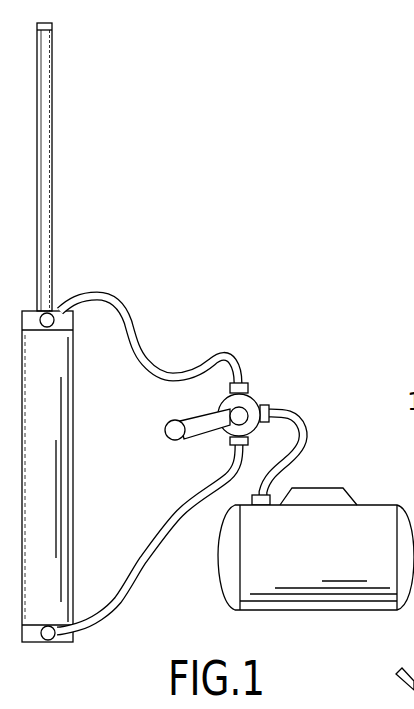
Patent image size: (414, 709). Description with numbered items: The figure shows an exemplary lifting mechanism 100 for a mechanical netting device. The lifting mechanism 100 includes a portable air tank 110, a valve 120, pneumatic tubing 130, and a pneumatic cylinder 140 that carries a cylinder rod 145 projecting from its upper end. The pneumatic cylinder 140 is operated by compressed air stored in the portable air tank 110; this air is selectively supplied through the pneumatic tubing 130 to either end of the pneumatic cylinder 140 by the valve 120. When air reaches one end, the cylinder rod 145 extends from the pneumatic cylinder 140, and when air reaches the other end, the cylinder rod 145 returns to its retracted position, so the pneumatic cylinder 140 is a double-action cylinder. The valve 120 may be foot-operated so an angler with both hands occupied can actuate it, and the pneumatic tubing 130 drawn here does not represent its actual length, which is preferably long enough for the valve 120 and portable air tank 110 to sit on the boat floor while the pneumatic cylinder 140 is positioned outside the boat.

The lifting mechanism 100 is at (218, 348).
The portable air tank 110 is at (330, 610).
The valve 120 is at (255, 395).
The pneumatic tubing 130 is at (218, 352).
The pneumatic cylinder 140 is at (75, 473).
The cylinder rod 145 is at (53, 166).